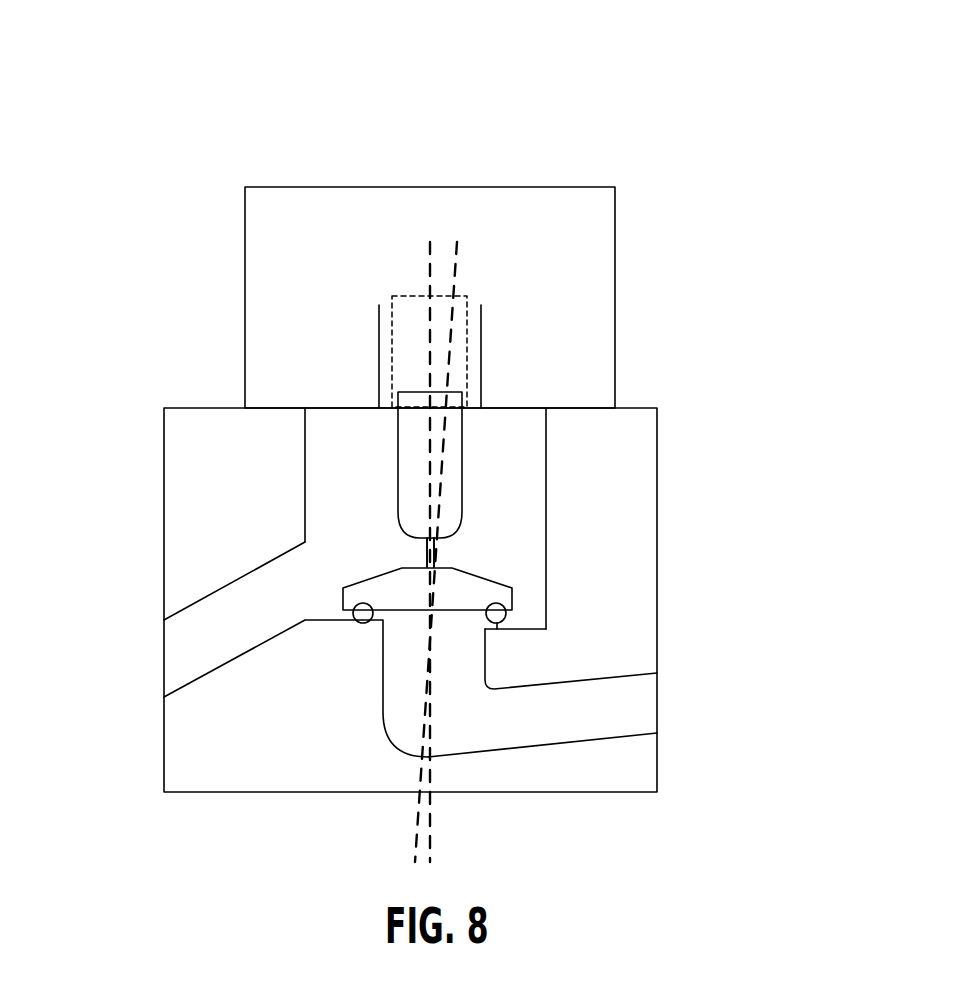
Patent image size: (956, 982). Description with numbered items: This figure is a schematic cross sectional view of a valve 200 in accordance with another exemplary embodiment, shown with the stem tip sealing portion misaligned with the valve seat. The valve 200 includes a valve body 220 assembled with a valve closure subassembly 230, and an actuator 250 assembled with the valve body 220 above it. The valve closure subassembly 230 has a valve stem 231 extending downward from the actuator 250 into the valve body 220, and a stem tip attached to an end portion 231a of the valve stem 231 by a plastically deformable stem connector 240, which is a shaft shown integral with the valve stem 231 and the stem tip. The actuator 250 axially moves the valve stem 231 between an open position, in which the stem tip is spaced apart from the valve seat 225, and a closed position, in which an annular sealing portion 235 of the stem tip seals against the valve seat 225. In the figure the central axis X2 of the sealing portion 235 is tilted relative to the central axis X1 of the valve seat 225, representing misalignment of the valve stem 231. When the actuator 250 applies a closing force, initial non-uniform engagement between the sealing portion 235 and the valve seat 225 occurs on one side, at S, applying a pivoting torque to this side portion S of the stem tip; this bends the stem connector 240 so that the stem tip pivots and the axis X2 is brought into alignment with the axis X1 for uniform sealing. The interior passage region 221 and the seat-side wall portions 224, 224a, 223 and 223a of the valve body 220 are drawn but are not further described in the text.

The valve 200 is at (779, 105).
The actuator 250 is at (592, 260).
The valve body 220 is at (209, 458).
The valve closure subassembly 230 is at (372, 462).
The valve stem 231 is at (462, 472).
The end portion of the valve stem 231a is at (462, 502).
The valve chamber flow direction 221 is at (495, 545).
The stem connector 240 is at (423, 548).
The annular sealing portion 235 is at (505, 640).
The valve seat 225 is at (530, 632).
The second wall portion 224 is at (562, 682).
The inclined surface of second wall portion 224a is at (650, 712).
The first wall portion 223 is at (214, 592).
The inclined surface of first wall portion 223a is at (167, 650).
The side portion of the stem tip S is at (362, 622).
The central axis of the valve seat X1 is at (472, 848).
The central axis of the sealing portion X2 is at (456, 554).